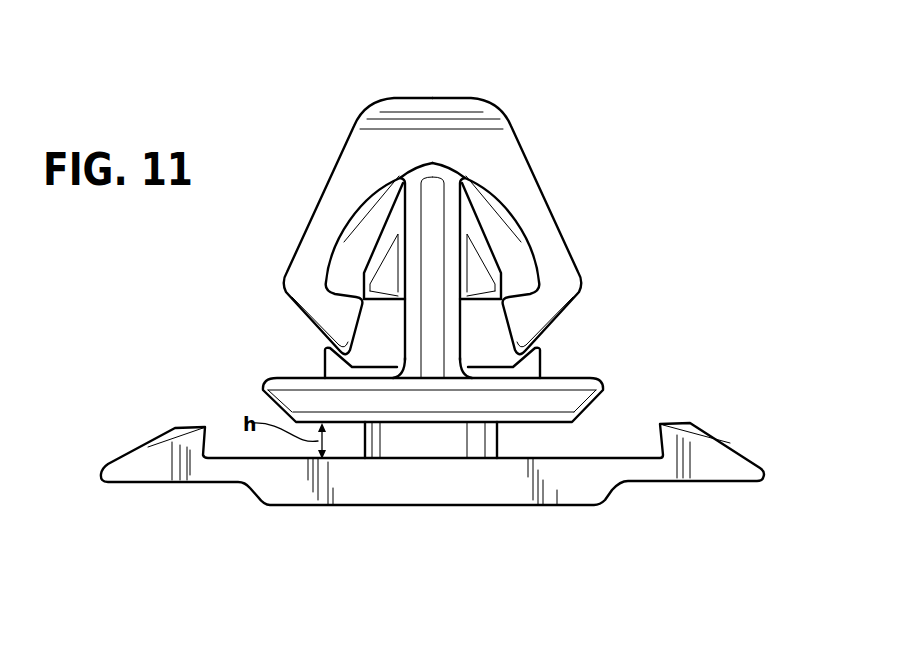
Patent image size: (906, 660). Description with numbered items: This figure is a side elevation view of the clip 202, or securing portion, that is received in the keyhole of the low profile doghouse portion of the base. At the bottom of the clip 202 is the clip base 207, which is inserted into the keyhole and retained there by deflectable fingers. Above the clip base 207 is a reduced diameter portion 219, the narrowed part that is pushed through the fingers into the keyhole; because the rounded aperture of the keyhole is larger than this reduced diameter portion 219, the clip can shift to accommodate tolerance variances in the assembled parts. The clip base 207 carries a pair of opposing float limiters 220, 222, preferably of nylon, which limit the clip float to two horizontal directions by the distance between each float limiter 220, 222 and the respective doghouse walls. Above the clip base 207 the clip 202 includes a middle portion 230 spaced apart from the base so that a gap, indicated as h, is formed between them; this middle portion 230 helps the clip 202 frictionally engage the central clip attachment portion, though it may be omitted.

The clip portion 202 is at (435, 98).
The middle portion 230 is at (568, 385).
The reduced diameter portion 219 is at (498, 440).
The clip base 207 is at (410, 469).
The float limiter 222 is at (138, 465).
The float limiter 220 is at (730, 445).